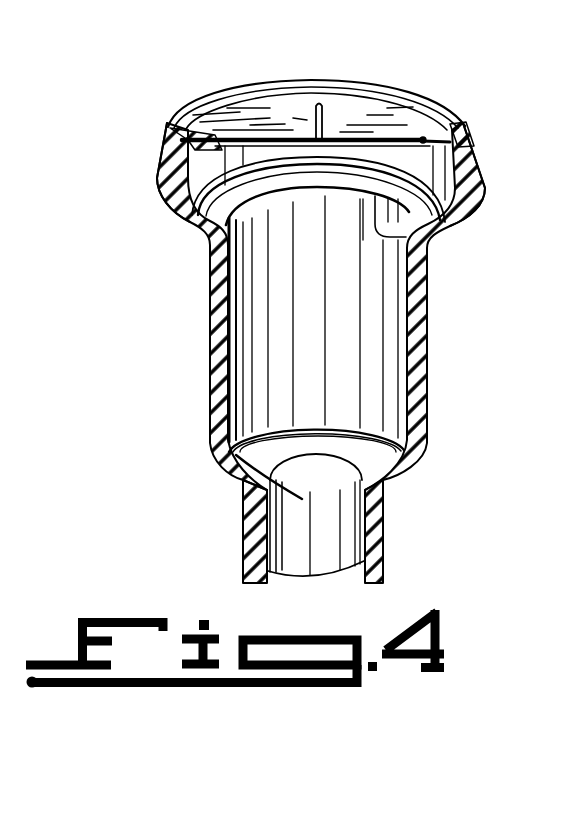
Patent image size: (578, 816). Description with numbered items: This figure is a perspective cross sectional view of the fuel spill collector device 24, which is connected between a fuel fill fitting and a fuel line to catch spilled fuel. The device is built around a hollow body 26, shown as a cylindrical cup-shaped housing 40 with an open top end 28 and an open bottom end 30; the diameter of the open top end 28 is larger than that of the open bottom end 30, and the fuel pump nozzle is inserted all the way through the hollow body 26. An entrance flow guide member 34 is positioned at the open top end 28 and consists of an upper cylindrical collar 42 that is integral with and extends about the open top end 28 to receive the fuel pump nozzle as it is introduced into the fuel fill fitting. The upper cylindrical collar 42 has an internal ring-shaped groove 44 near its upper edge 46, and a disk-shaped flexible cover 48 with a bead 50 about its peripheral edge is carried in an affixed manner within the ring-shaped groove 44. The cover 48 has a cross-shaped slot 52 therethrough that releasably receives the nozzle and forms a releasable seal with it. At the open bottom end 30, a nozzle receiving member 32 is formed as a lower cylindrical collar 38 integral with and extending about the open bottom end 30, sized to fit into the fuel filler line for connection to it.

The fuel spill collector device 24 is at (170, 273).
The hollow body 26 is at (209, 347).
The open top end 28 is at (425, 237).
The open bottom end 30 is at (262, 497).
The nozzle receiving member 32 is at (384, 542).
The entrance flow guide member 34 is at (486, 163).
The lower cylindrical collar 38 is at (253, 542).
The cylindrical cup-shaped housing 40 is at (207, 412).
The upper cylindrical collar 42 is at (157, 180).
The internal ring-shaped groove 44 is at (165, 135).
The upper edge 46 is at (218, 103).
The disk-shaped flexible cover 48 is at (400, 107).
The bead 50 is at (472, 140).
The cross-shaped slot 52 is at (324, 118).